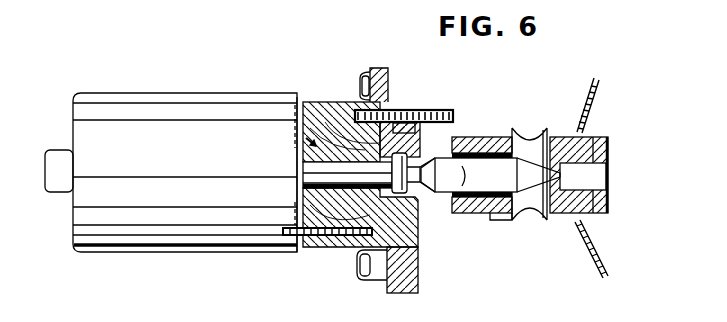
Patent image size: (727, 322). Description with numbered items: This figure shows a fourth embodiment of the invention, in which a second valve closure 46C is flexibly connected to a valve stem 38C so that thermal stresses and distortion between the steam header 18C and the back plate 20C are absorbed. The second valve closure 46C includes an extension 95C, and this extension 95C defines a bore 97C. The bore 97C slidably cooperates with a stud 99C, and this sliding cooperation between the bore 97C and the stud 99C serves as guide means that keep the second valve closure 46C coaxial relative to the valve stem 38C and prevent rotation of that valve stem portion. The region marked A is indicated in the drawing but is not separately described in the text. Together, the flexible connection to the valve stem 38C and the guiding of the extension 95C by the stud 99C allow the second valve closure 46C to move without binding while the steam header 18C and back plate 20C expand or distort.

The adhesive region A is at (303, 72).
The steam header 18C is at (583, 262).
The back plate 20C is at (418, 270).
The valve stem 38C is at (453, 218).
The second valve closure 46C is at (320, 102).
The extension 95C is at (447, 135).
The bore 97C is at (436, 109).
The stud 99C is at (389, 100).